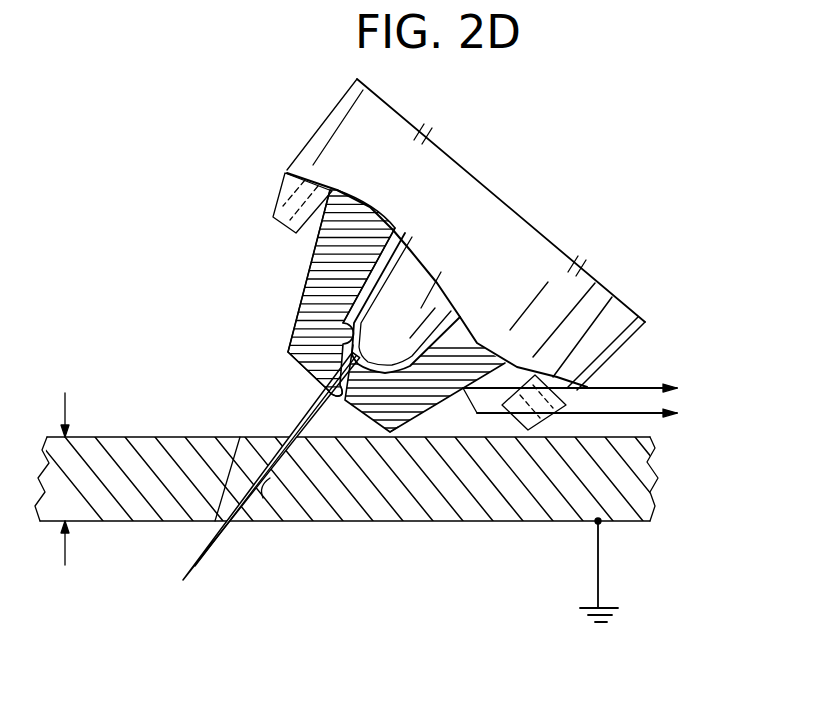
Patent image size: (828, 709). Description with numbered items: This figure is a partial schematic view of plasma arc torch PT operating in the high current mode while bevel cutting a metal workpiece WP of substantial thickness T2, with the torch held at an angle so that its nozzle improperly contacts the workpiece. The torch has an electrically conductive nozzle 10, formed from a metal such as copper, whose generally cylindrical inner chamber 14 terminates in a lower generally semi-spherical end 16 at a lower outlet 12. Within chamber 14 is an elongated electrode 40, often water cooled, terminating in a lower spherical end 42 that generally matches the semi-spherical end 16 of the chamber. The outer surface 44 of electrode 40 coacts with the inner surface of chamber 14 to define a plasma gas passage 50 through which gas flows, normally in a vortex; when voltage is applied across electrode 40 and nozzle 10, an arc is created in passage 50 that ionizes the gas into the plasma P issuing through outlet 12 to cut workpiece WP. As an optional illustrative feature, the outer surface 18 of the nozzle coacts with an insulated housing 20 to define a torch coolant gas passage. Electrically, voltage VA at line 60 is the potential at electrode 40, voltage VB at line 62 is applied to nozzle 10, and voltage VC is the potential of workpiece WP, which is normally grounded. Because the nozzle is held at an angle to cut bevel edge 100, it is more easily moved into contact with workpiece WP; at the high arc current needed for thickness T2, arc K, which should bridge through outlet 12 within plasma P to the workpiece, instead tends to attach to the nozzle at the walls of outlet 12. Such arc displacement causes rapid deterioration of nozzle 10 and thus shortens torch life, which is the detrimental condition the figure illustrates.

The nozzle 10 is at (297, 337).
The lower outlet 12 is at (328, 392).
The inner chamber 14 is at (376, 278).
The lower semi-spherical end 16 is at (308, 300).
The outer surface of the nozzle 18 is at (308, 278).
The insulated housing 20 is at (285, 198).
The electrode 40 is at (419, 290).
The lower spherical end 42 is at (443, 435).
The outer surface of the electrode 44 is at (411, 243).
The plasma gas passage 50 is at (392, 258).
The line 60 is at (636, 386).
The line 62 is at (656, 462).
The bevel edge 100 is at (272, 523).
The arc K is at (406, 432).
The plasma arc P is at (310, 423).
The plasma arc torch PT is at (318, 122).
The workpiece WP is at (125, 462).
The thickness T2 is at (66, 502).
The voltage at line 60 VA is at (583, 385).
The voltage at line 62 VB is at (594, 413).
The voltage of workpiece VC is at (607, 570).